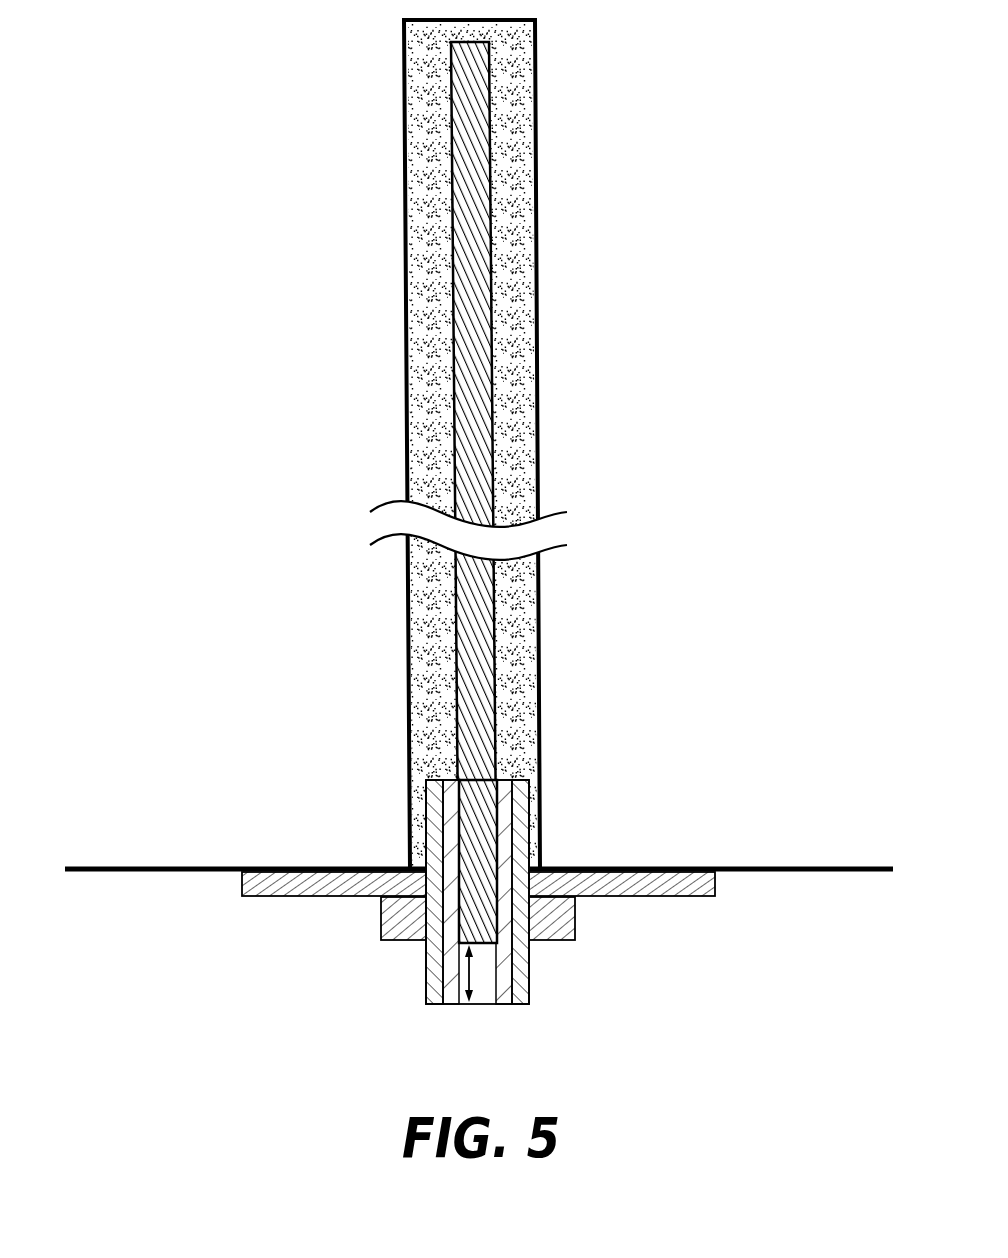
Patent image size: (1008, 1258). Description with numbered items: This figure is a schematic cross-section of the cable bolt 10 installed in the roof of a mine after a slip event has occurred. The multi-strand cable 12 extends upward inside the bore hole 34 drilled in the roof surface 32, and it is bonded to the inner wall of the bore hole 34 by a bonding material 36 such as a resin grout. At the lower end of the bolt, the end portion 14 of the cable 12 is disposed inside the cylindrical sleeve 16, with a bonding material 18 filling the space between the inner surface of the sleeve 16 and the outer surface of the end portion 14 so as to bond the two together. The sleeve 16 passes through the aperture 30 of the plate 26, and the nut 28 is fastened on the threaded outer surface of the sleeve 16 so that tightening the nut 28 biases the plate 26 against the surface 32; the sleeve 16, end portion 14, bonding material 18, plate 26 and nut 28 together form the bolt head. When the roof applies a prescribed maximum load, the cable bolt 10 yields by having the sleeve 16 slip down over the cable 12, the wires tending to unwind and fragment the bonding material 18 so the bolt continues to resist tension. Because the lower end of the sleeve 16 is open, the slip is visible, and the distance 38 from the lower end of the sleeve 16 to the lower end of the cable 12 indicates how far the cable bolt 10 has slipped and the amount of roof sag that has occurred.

The cable bolt 10 is at (514, 357).
The multi-strand cable 12 is at (483, 282).
The end portion 14 is at (498, 943).
The cylindrical sleeve 16 is at (427, 982).
The bonding material 18 is at (519, 978).
The plate 26 is at (242, 897).
The nut 28 is at (381, 925).
The aperture 30 is at (532, 897).
The surface 32 is at (775, 873).
The bore hole 34 is at (405, 138).
The bonding material 36 is at (437, 229).
The distance 38 is at (490, 975).